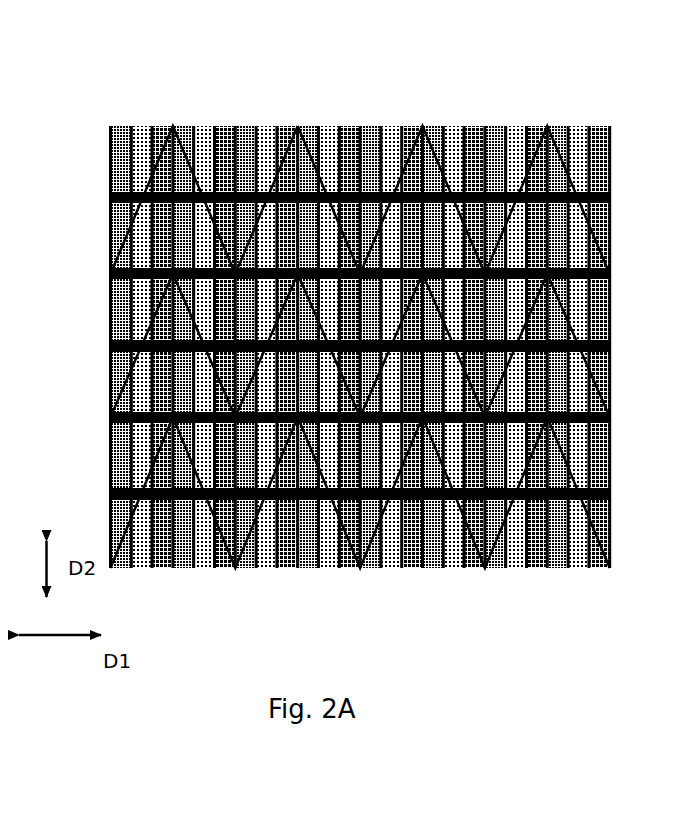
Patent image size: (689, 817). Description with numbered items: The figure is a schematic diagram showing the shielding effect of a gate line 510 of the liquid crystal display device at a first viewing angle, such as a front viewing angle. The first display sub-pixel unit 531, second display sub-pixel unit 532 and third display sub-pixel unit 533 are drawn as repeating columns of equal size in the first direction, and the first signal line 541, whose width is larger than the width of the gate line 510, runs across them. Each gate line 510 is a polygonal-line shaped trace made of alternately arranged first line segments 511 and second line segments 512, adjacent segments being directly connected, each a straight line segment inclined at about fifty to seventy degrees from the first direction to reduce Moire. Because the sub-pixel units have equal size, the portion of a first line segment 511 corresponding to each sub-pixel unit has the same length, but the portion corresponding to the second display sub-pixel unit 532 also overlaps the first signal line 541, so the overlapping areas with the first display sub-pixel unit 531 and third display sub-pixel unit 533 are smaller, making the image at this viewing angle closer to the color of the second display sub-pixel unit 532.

The gate line 510 is at (360, 290).
The first line segment 511 is at (282, 128).
The second line segment 512 is at (305, 128).
The first display sub-pixel unit 531 is at (118, 155).
The second display sub-pixel unit 532 is at (142, 135).
The third display sub-pixel unit 533 is at (153, 138).
The first signal line 541 is at (110, 200).